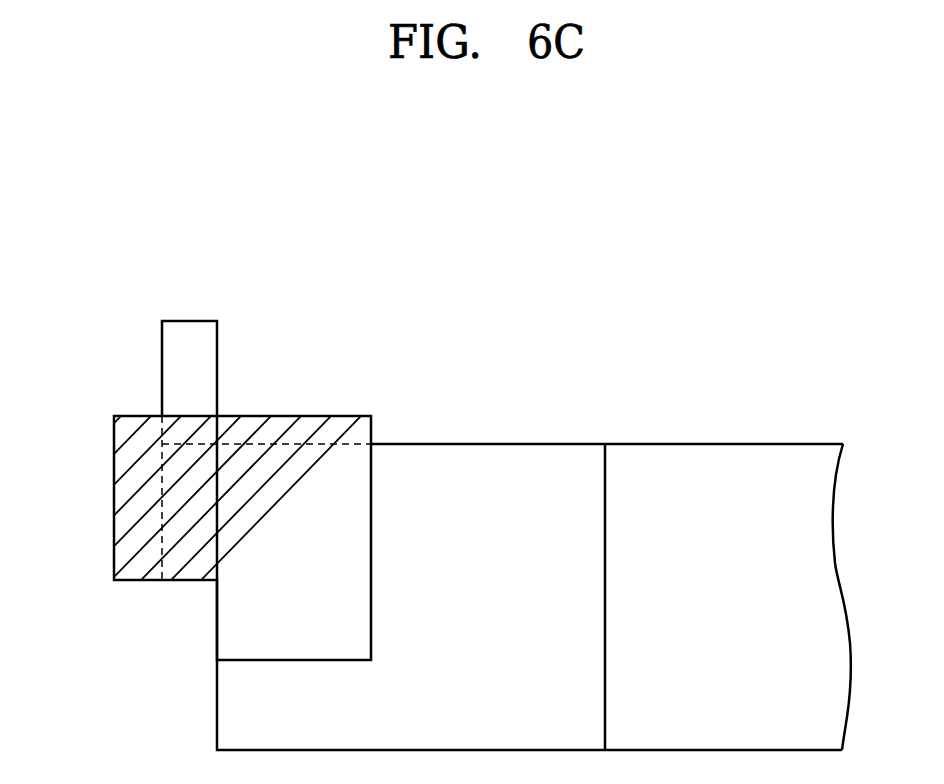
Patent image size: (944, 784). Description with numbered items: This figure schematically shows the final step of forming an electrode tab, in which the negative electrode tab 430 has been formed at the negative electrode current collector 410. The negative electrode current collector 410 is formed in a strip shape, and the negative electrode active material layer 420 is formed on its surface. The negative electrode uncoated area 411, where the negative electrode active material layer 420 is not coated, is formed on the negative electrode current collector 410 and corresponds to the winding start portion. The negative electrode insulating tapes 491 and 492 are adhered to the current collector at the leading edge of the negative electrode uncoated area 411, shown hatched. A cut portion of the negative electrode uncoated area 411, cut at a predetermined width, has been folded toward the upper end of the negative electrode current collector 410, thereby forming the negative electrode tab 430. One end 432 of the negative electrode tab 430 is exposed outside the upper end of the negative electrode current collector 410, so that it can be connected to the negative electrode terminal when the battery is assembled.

The negative electrode current collector 410 is at (551, 470).
The negative electrode uncoated area 411 is at (476, 615).
The negative electrode active material layer 420 is at (719, 470).
The negative electrode tab 430 is at (211, 461).
The one end of the negative electrode tab 432 is at (208, 332).
The negative electrode insulating tape 491 is at (383, 392).
The negative electrode insulating tape 492 is at (317, 415).